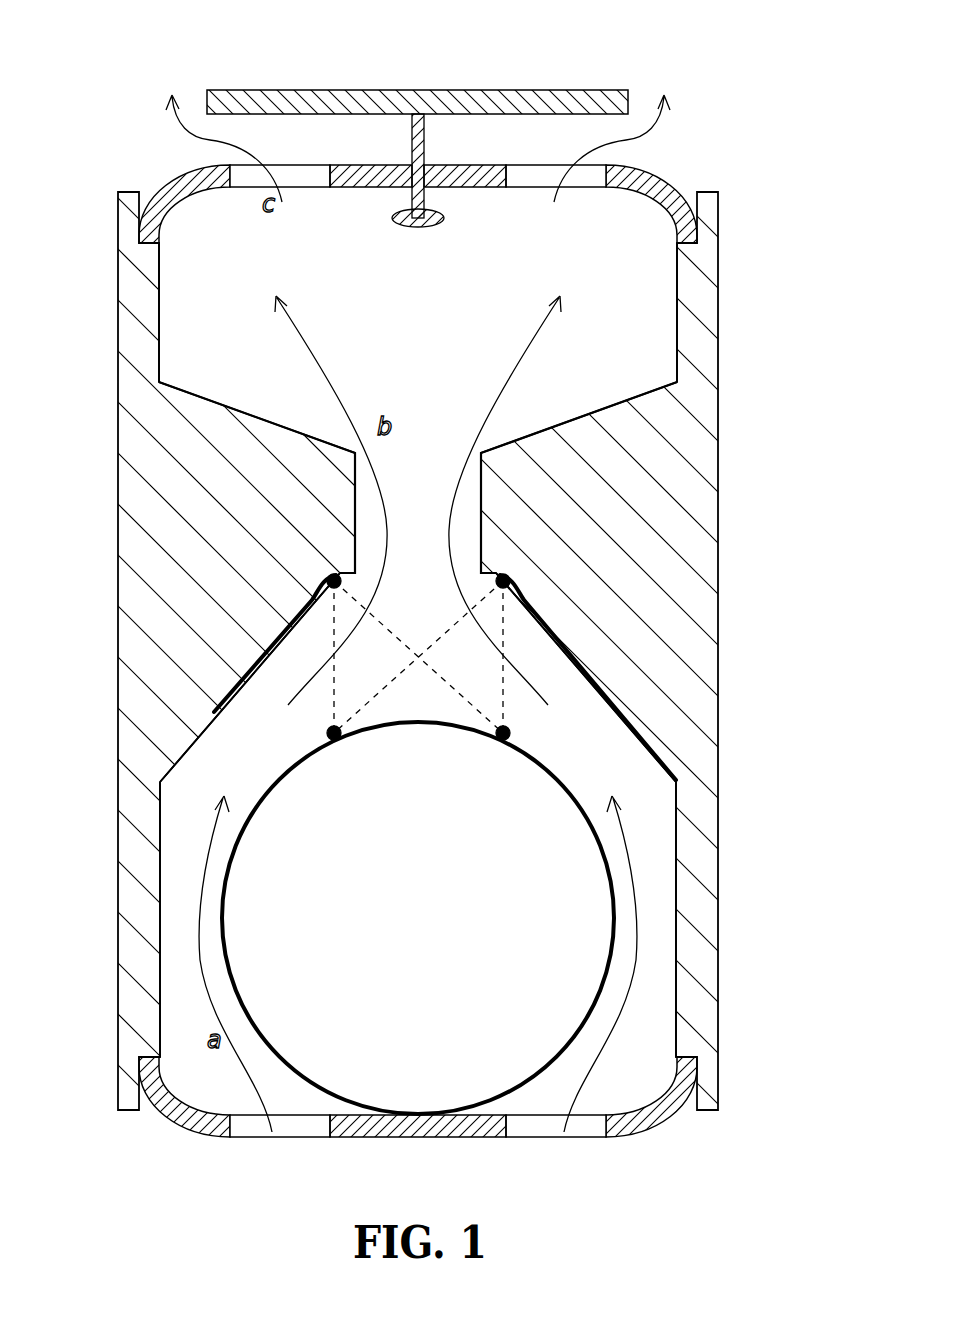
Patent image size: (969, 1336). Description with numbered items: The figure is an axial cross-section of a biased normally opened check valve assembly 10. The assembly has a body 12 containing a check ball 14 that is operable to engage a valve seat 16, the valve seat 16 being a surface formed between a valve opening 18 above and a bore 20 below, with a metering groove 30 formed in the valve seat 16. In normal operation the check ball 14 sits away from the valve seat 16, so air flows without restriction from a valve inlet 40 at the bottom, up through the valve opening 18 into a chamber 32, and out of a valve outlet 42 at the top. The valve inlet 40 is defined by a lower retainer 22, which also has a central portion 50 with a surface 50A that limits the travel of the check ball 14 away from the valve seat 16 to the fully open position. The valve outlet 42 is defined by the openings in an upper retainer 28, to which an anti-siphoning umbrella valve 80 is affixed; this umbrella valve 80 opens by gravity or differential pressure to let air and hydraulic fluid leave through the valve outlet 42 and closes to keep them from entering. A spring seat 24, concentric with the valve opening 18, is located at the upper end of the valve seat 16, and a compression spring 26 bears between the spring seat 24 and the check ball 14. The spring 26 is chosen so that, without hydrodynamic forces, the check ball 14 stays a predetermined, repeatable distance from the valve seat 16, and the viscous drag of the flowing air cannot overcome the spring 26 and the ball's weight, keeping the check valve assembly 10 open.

The check valve assembly 10 is at (119, 30).
The body 12 is at (707, 440).
The check ball 14 is at (432, 933).
The valve seat 16 is at (176, 735).
The valve opening 18 is at (370, 483).
The bore 20 is at (160, 900).
The lower retainer 22 is at (180, 1122).
The spring seat 24 is at (508, 578).
The compression spring 26 is at (512, 732).
The upper retainer 28 is at (177, 178).
The metering groove 30 is at (247, 658).
The chamber 32 is at (212, 297).
The valve inlet 40 is at (307, 1128).
The valve outlet 42 is at (306, 173).
The central portion 50 is at (445, 1130).
The surface 50A is at (490, 1113).
The anti-siphoning umbrella valve 80 is at (492, 92).